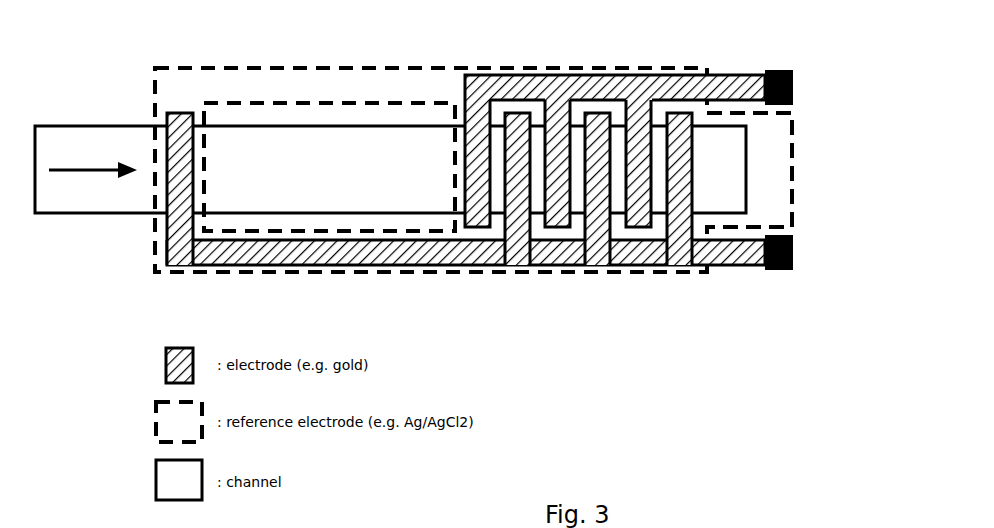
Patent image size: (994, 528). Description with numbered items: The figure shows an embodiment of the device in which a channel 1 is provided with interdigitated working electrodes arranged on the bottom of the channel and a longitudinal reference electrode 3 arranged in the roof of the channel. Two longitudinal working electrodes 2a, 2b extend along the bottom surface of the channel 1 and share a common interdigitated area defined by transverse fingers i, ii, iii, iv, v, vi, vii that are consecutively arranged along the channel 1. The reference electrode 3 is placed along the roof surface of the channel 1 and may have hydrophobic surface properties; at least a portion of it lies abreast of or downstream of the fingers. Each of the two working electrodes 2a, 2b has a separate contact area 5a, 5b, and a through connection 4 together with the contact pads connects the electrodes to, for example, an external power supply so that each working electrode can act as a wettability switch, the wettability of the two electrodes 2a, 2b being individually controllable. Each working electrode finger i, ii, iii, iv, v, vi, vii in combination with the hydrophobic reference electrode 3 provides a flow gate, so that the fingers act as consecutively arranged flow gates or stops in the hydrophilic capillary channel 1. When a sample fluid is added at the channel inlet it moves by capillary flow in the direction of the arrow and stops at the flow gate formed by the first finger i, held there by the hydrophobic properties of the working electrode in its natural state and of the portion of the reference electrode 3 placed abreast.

The channel 1 is at (102, 182).
The interdigitated working electrode 2a is at (293, 253).
The interdigitated working electrode 2b is at (515, 85).
The longitudinal reference electrode 3 is at (315, 87).
The through connection 4 is at (780, 172).
The contact area 5a is at (795, 240).
The contact area 5b is at (795, 78).
The working electrode finger i is at (165, 247).
The working electrode finger ii is at (463, 217).
The working electrode finger iii is at (515, 237).
The working electrode finger iv is at (543, 220).
The working electrode finger v is at (578, 247).
The working electrode finger vi is at (623, 220).
The working electrode finger vii is at (660, 247).